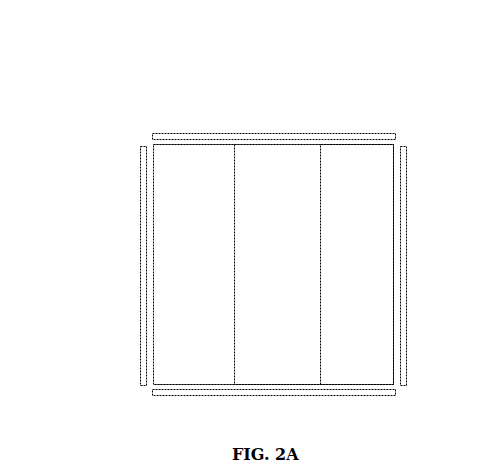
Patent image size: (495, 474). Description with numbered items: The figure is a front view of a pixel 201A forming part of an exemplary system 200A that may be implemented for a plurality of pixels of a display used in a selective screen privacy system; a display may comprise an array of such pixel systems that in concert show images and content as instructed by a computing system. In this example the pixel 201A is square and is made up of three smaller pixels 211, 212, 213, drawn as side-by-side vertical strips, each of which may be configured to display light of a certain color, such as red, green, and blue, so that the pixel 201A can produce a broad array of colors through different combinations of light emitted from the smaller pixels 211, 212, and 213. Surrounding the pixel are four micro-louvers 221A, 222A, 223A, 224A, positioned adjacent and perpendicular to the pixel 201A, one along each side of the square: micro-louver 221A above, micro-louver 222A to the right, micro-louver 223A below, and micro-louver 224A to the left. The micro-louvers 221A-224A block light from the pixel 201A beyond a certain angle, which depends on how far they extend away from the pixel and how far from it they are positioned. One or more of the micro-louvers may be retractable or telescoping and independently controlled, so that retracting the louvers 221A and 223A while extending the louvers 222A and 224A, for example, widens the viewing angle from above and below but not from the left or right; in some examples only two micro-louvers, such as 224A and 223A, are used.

The system 200A is at (69, 116).
The pixel 201A is at (150, 142).
The smaller pixel 211 is at (194, 265).
The smaller pixel 212 is at (278, 265).
The smaller pixel 213 is at (357, 265).
The micro-louver 221A is at (264, 133).
The micro-louver 222A is at (408, 228).
The micro-louver 223A is at (280, 395).
The micro-louver 224A is at (140, 232).